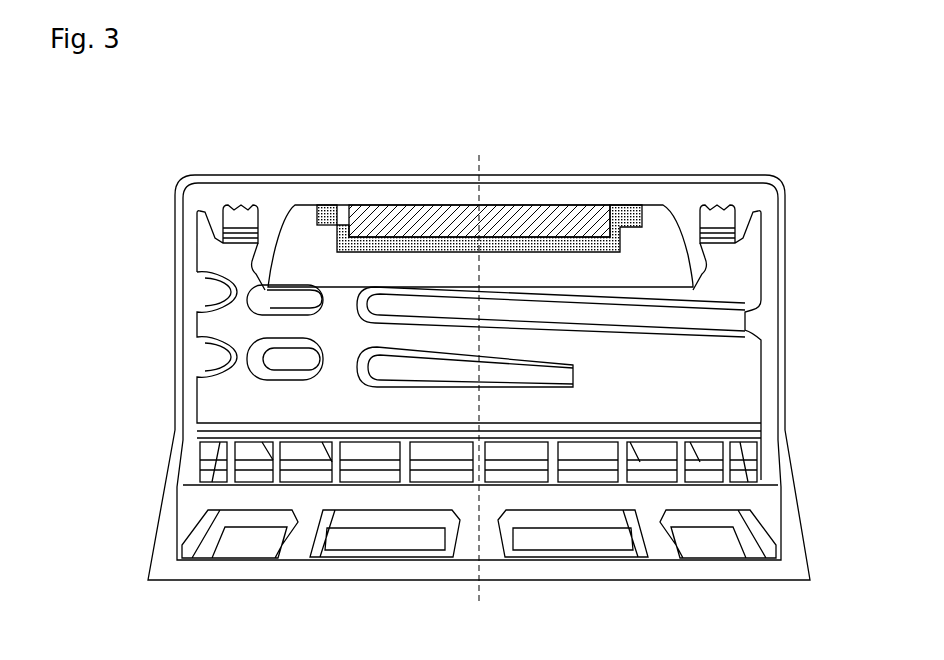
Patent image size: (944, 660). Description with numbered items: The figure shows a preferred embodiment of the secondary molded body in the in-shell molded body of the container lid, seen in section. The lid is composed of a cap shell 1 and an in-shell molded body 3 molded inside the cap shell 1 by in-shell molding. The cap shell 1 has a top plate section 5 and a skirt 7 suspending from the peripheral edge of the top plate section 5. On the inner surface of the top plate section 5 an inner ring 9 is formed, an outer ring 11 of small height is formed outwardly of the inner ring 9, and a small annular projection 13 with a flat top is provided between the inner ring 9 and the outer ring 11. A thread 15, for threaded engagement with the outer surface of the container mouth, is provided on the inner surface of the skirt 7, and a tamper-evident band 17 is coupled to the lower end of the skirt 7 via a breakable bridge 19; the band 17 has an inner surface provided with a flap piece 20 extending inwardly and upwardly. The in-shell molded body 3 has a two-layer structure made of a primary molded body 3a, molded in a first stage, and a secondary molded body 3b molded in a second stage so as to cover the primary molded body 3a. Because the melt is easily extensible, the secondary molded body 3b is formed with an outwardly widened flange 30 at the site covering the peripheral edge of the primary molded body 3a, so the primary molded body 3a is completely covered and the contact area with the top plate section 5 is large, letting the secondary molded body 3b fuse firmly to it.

The cap shell 1 is at (123, 190).
The in-shell molded body 3 is at (447, 131).
The primary molded body 3a is at (392, 213).
The secondary molded body 3b is at (437, 237).
The top plate section 5 is at (503, 373).
The skirt 7 is at (489, 373).
The inner ring 9 is at (678, 235).
The outer ring 11 is at (745, 233).
The small annular projection 13 is at (713, 207).
The thread 15 is at (708, 328).
The tamper-evident band 17 is at (810, 553).
The breakable bridge 19 is at (733, 485).
The flap piece 20 is at (680, 520).
The flange 30 is at (326, 205).